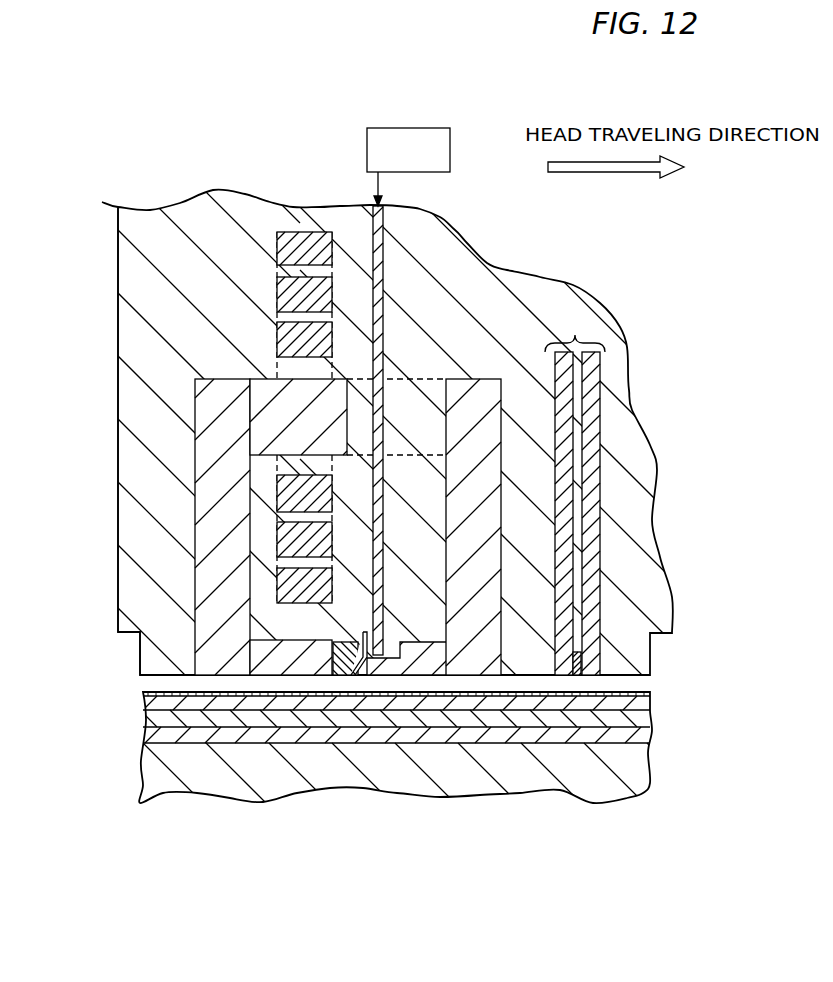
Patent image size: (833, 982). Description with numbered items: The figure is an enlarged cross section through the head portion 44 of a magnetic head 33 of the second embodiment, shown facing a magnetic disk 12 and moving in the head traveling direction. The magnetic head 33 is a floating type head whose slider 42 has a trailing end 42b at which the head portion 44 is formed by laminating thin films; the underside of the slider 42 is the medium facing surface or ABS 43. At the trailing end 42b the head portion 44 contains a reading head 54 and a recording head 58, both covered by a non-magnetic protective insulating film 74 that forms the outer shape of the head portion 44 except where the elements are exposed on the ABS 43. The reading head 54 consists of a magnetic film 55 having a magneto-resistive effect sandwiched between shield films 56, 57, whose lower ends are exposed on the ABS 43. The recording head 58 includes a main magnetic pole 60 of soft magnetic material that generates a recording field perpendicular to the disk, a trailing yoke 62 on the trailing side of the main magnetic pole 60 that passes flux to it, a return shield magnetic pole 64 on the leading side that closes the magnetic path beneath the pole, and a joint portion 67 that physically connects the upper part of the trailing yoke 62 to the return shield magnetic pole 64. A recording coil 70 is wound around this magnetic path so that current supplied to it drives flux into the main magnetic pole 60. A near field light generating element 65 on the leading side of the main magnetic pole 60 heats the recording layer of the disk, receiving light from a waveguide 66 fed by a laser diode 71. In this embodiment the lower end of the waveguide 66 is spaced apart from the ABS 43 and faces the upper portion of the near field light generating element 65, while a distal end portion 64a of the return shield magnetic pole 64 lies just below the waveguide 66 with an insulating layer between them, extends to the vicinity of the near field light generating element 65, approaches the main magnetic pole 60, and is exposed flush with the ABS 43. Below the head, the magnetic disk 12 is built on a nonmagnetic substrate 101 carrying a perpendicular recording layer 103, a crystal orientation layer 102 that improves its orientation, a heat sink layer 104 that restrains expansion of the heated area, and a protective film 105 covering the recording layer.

The magnetic disk 12 is at (124, 788).
The magnetic head 33 is at (143, 177).
The slider 42 is at (127, 396).
The trailing end 42b is at (118, 458).
The ABS (medium facing surface) 43 is at (642, 683).
The head portion 44 is at (492, 285).
The reading head 54 is at (575, 332).
The magnetic film 55 is at (578, 652).
The shield film 56 is at (555, 372).
The shield film 57 is at (600, 375).
The recording head 58 is at (205, 283).
The main magnetic pole 60 is at (330, 660).
The trailing yoke 62 is at (220, 660).
The return shield magnetic pole 64 is at (474, 660).
The distal end portion 64a is at (384, 662).
The near field light generating element 65 is at (363, 665).
The waveguide 66 is at (384, 270).
The joint portion 67 is at (262, 387).
The recording coil 70 is at (276, 340).
The laser diode 71 is at (437, 140).
The protective insulating film 74 is at (128, 268).
The substrate 101 is at (635, 768).
The crystal orientation layer 102 is at (643, 720).
The perpendicular recording layer 103 is at (640, 704).
The heat sink layer 104 is at (645, 737).
The protective film 105 is at (630, 694).